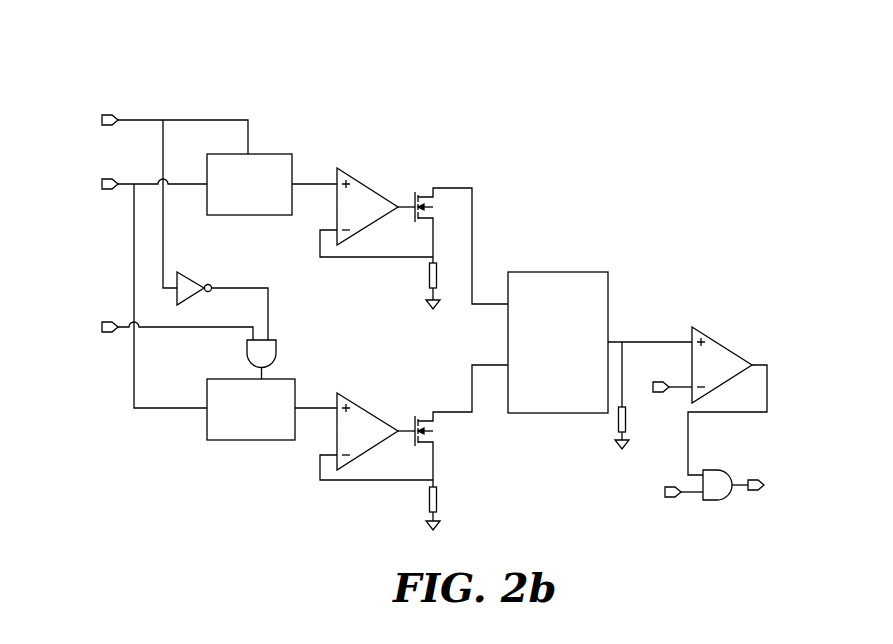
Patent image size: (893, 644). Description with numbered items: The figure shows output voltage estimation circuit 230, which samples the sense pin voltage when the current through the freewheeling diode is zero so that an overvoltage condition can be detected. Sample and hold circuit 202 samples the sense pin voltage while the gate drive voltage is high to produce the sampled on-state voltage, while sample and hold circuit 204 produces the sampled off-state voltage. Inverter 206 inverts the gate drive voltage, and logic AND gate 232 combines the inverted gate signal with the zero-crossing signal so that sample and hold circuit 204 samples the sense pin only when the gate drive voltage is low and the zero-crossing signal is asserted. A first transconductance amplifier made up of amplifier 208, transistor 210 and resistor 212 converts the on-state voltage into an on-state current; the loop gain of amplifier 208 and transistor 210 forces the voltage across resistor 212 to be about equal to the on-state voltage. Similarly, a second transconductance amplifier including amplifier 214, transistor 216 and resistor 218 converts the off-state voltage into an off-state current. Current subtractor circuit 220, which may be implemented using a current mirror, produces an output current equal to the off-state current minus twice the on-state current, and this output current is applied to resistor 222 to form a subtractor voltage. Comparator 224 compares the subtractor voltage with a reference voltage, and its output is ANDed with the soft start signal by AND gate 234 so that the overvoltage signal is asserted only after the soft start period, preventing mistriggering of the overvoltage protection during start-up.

The output voltage estimation circuit 230 is at (93, 63).
The sample and hold circuit 202 is at (266, 154).
The sample and hold circuit 204 is at (284, 379).
The inverter 206 is at (197, 276).
The amplifier 208 is at (362, 183).
The transistor 210 is at (428, 192).
The resistor 212 is at (429, 278).
The amplifier 214 is at (352, 401).
The transistor 216 is at (428, 416).
The resistor 218 is at (429, 505).
The current subtractor circuit 220 is at (516, 272).
The resistor 222 is at (626, 421).
The comparator 224 is at (706, 336).
The logic AND gate 232 is at (277, 341).
The AND gate 234 is at (707, 471).